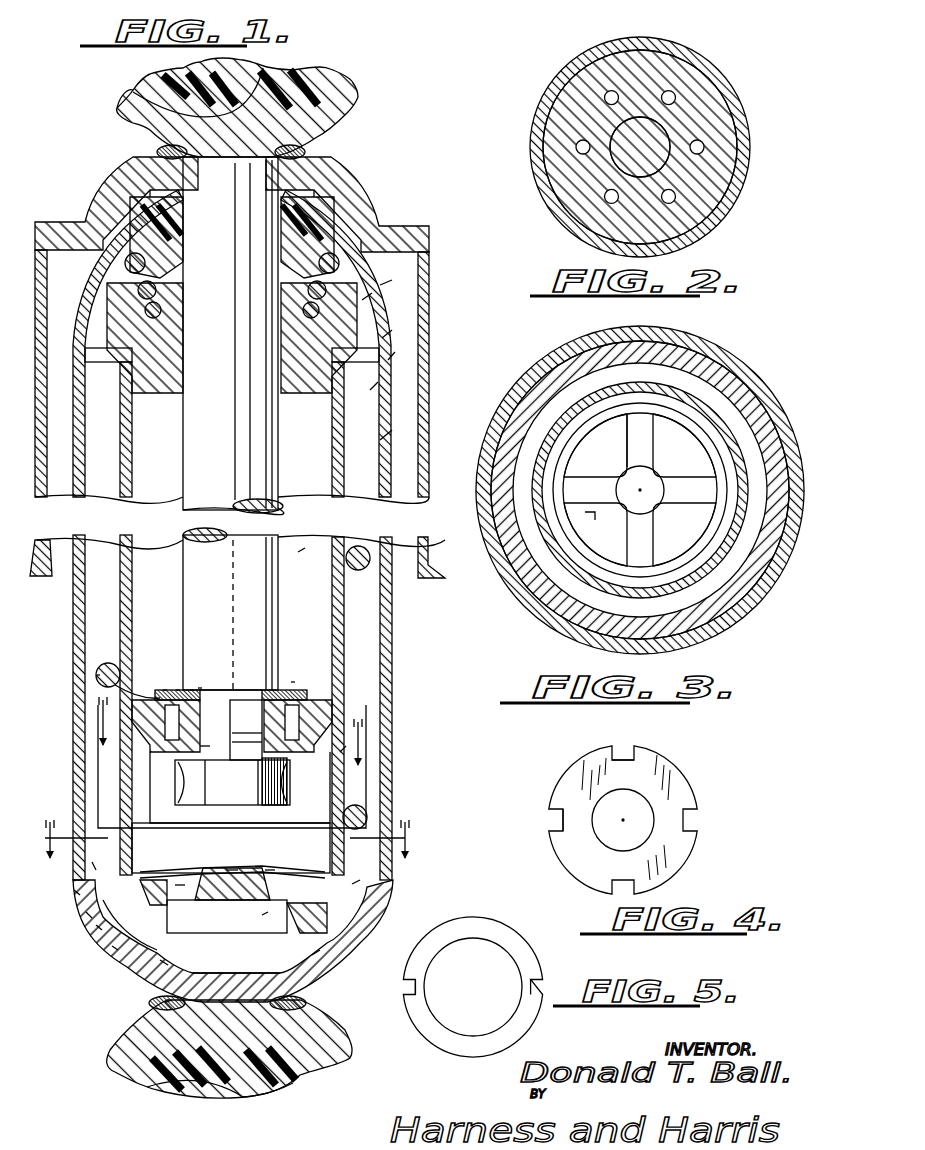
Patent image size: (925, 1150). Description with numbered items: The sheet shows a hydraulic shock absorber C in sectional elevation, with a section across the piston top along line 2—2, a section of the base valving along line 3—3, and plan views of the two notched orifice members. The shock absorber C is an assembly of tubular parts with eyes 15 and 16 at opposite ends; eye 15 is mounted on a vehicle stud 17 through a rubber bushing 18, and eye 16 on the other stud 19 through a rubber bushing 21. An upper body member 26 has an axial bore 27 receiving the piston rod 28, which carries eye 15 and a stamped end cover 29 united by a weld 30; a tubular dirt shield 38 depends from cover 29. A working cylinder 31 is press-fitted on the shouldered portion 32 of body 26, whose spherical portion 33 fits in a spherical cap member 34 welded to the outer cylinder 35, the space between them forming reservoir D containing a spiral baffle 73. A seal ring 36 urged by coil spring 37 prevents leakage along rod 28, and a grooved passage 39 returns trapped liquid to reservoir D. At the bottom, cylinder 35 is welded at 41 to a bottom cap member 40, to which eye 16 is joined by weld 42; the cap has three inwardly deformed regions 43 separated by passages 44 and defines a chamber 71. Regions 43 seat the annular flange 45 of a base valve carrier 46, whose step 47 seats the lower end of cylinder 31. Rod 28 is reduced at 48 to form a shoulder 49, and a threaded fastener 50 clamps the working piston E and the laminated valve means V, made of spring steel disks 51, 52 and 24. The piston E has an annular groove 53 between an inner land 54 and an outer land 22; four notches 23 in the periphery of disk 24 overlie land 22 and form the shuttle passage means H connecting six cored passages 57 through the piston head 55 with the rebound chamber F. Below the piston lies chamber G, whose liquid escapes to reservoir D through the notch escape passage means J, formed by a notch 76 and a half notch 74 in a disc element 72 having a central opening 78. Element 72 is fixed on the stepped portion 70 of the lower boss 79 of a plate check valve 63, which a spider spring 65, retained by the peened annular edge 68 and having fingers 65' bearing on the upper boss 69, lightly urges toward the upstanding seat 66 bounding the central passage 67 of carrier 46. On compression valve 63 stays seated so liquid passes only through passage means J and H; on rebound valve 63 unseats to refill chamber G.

In FIG. 1, the eye 15 is at (350, 108).
In FIG. 1, the eye 16 is at (312, 1030).
In FIG. 1, the relatively movable vehicle part 17 is at (208, 66).
In FIG. 1, the rubber bushing 18 is at (128, 100).
In FIG. 1, the relatively movable vehicle part 19 is at (246, 1096).
In FIG. 1, the rubber bushing 21 is at (175, 1082).
In FIG. 1, the outer piston land 22 is at (170, 723).
In FIG. 1, the notches 23 is at (115, 664).
In FIG. 4, the notches 23 is at (628, 748).
In FIG. 1, the valve member 24 is at (238, 730).
In FIG. 4, the valve member 24 is at (668, 792).
In FIG. 1, the upper body member 26 is at (372, 293).
In FIG. 1, the axial bore 27 is at (283, 238).
In FIG. 1, the working piston rod 28 is at (195, 443).
In FIG. 1, the end cover 29 is at (125, 176).
In FIG. 1, the weld 30 is at (300, 155).
In FIG. 1, the working cylinder 31 is at (334, 466).
In FIG. 2, the working cylinder 31 is at (540, 100).
In FIG. 3, the working cylinder 31 is at (588, 392).
In FIG. 1, the shouldered cylindrical portion 32 is at (378, 382).
In FIG. 1, the spherical portion 33 is at (392, 330).
In FIG. 1, the spherical cap member 34 is at (392, 280).
In FIG. 1, the outer tubular cylinder 35 is at (392, 430).
In FIG. 3, the outer tubular cylinder 35 is at (732, 382).
In FIG. 1, the seal ring 36 is at (283, 222).
In FIG. 1, the compression coil spring 37 is at (344, 230).
In FIG. 1, the dirt shield 38 is at (395, 352).
In FIG. 1, the grooved passage 39 is at (78, 292).
In FIG. 1, the bottom cap member 40 is at (92, 862).
In FIG. 3, the bottom cap member 40 is at (748, 372).
In FIG. 1, the weld 41 is at (74, 890).
In FIG. 1, the weld 42 is at (165, 1002).
In FIG. 1, the regions of inward deformation 43 is at (160, 960).
In FIG. 1, the passages 44 is at (320, 950).
In FIG. 1, the annular flange 45 is at (112, 946).
In FIG. 1, the base valve carrier 46 is at (96, 925).
In FIG. 1, the stepped portion 47 is at (86, 912).
In FIG. 1, the reduced rod end 48 is at (172, 766).
In FIG. 2, the reduced rod end 48 is at (645, 117).
In FIG. 1, the piston shoulder 49 is at (231, 699).
In FIG. 1, the fastener 50 is at (262, 795).
In FIG. 1, the valve member 51 is at (165, 690).
In FIG. 1, the valve member 52 is at (178, 690).
In FIG. 1, the annular groove 53 is at (192, 690).
In FIG. 1, the land 54 is at (200, 688).
In FIG. 1, the piston head 55 is at (346, 746).
In FIG. 1, the liquid conducting passages 57 is at (200, 746).
In FIG. 2, the liquid conducting passages 57 is at (704, 145).
In FIG. 1, the plate check valve 63 is at (270, 870).
In FIG. 3, the plate check valve 63 is at (640, 490).
In FIG. 1, the spider spring 65 is at (172, 863).
In FIG. 3, the spider spring 65 is at (690, 388).
In FIG. 3, the spring fingers 65' is at (596, 514).
In FIG. 1, the valve seat 66 is at (307, 918).
In FIG. 1, the unrestricted passage 67 is at (237, 960).
In FIG. 1, the annular edge 68 is at (150, 870).
In FIG. 3, the annular edge 68 is at (632, 404).
In FIG. 1, the upper boss 69 is at (232, 870).
In FIG. 3, the upper boss 69 is at (650, 480).
In FIG. 1, the stepped portion 70 is at (227, 919).
In FIG. 1, the interior chamber 71 is at (227, 994).
In FIG. 1, the disc element 72 is at (232, 880).
In FIG. 5, the disc element 72 is at (487, 924).
In FIG. 1, the spiral baffle member 73 is at (97, 675).
In FIG. 1, the half notch 74 is at (233, 941).
In FIG. 5, the half notch 74 is at (405, 987).
In FIG. 1, the notch 76 is at (296, 878).
In FIG. 5, the notch 76 is at (535, 983).
In FIG. 5, the boss-receiving opening 78 is at (462, 1025).
In FIG. 1, the lower boss 79 is at (181, 898).
In FIG. 1, the section line 2— 2 is at (229, 739).
In FIG. 1, the section line 3— 3 is at (220, 839).
In FIG. 1, the shock absorber C is at (370, 193).
In FIG. 1, the reservoir D is at (358, 420).
In FIG. 1, the working piston E is at (330, 716).
In FIG. 2, the working piston E is at (574, 79).
In FIG. 1, the rebound chamber F is at (300, 551).
In FIG. 1, the chamber G is at (360, 880).
In FIG. 1, the shuttle passage means H is at (284, 781).
In FIG. 4, the shuttle passage means H is at (688, 832).
In FIG. 1, the notch escape passage means J is at (258, 913).
In FIG. 1, the valve means V is at (293, 680).